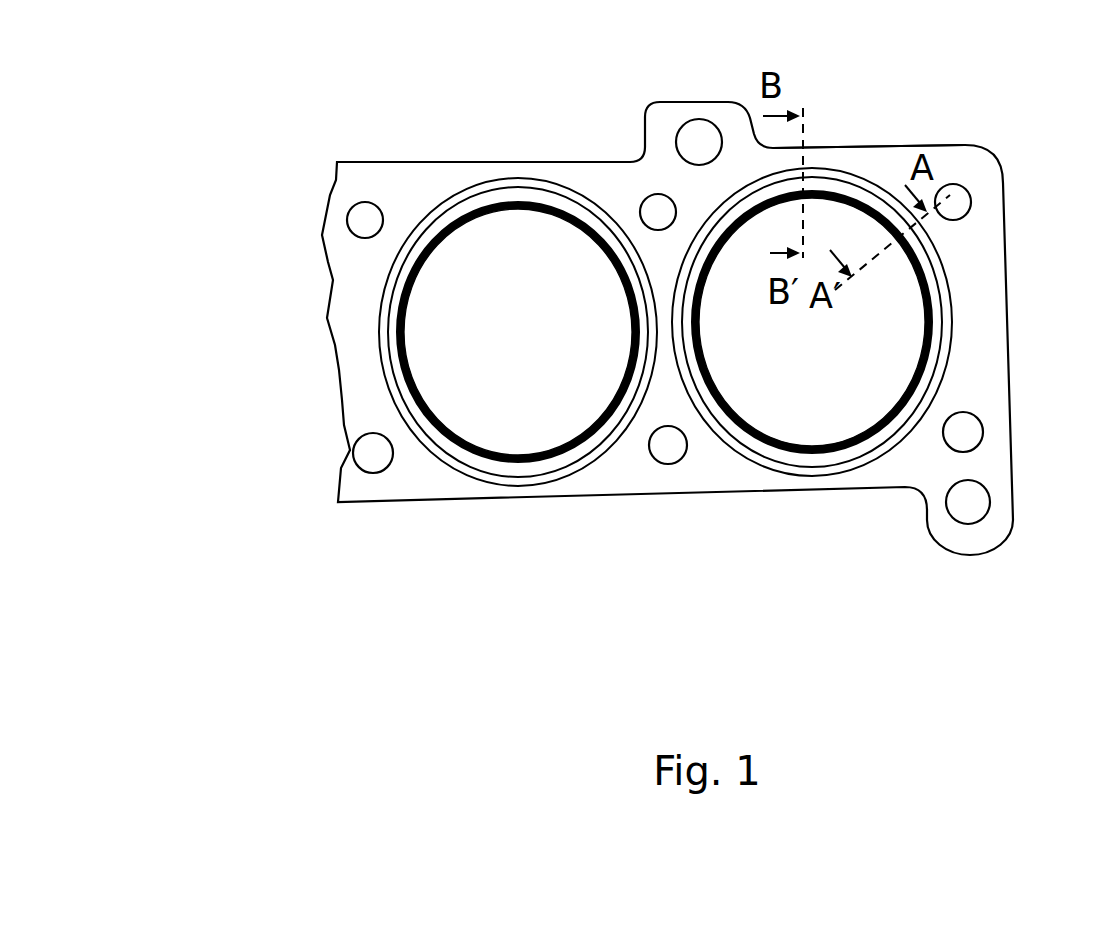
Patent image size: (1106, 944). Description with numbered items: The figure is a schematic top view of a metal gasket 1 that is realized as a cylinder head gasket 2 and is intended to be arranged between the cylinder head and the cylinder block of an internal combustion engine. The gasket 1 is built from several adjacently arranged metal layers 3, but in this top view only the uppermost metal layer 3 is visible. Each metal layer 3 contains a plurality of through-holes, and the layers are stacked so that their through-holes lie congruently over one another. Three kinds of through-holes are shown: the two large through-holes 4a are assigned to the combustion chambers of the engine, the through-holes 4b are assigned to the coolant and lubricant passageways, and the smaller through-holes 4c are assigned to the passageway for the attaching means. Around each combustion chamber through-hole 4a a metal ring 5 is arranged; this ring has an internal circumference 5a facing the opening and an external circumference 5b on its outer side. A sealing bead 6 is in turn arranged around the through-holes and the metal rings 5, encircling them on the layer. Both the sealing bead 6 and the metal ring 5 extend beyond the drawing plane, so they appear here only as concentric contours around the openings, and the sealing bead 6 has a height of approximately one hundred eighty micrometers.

The metal gasket 1 is at (395, 170).
The cylinder head gasket 2 is at (430, 170).
The metal layer 3 is at (878, 160).
The through-hole 4a is at (492, 360).
The through-hole 4b is at (699, 142).
The through-hole 4c is at (362, 222).
The metal ring 5 is at (478, 458).
The internal circumference 5a is at (518, 207).
The external circumference 5b is at (503, 172).
The sealing bead 6 is at (567, 470).